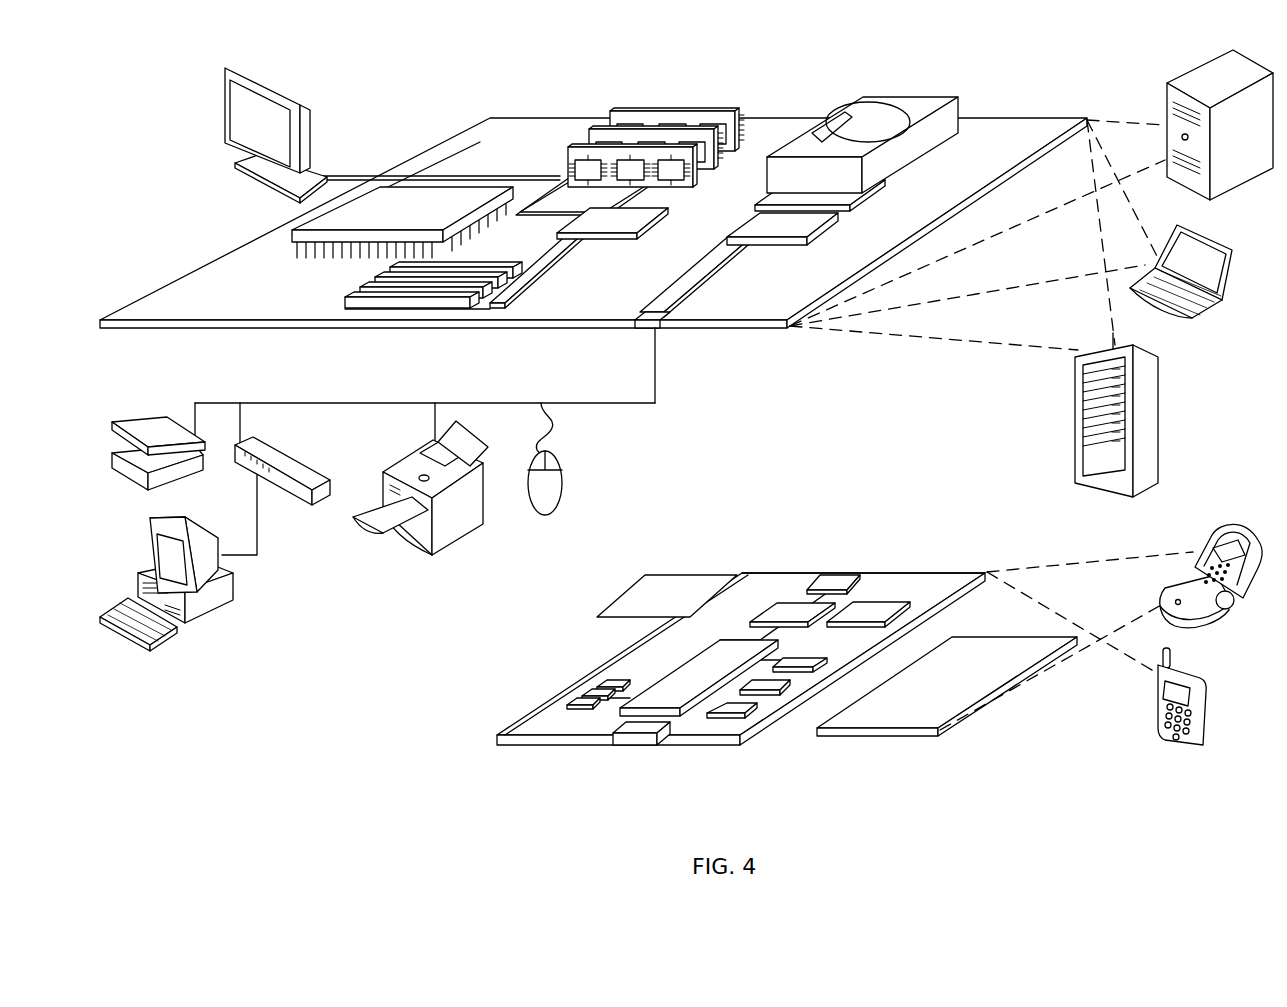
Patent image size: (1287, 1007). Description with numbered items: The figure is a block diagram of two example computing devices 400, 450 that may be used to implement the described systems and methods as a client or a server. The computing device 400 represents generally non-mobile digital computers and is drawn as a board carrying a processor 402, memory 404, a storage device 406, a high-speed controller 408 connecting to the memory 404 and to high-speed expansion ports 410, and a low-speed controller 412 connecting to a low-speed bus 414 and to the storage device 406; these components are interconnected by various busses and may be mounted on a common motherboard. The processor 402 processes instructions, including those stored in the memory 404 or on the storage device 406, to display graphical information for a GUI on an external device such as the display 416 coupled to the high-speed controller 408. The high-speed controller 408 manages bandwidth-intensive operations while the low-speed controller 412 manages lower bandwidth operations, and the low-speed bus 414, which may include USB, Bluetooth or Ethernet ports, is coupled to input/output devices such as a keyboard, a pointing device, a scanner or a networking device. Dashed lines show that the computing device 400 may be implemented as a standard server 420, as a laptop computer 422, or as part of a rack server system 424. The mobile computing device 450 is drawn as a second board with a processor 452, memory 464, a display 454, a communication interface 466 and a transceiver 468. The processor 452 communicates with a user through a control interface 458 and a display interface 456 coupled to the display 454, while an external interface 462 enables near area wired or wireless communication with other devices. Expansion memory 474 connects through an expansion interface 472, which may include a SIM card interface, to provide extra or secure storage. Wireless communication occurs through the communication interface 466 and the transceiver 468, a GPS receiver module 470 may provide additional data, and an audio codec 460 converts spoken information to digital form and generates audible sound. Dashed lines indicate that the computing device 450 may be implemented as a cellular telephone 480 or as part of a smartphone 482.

The computing device 400 is at (133, 82).
The processor 402 is at (294, 238).
The memory 404 is at (622, 110).
The storage device 406 is at (850, 100).
The high-speed controller 408 is at (590, 222).
The high-speed expansion ports 410 is at (368, 294).
The low-speed controller 412 is at (765, 217).
The low-speed bus 414 is at (662, 322).
The display 416 is at (225, 70).
The standard server 420 is at (1168, 112).
The laptop computer 422 is at (1226, 256).
The rack server system 424 is at (1075, 450).
The computing device 450 is at (695, 678).
The processor 452 is at (672, 705).
The display 454 is at (905, 720).
The display interface 456 is at (738, 708).
The control interface 458 is at (768, 690).
The audio codec 460 is at (800, 665).
The external interface 462 is at (633, 735).
The memory 464 is at (588, 702).
The communication interface 466 is at (792, 615).
The transceiver 468 is at (868, 612).
The GPS receiver module 470 is at (843, 586).
The expansion interface 472 is at (710, 593).
The expansion memory 474 is at (648, 593).
The cellular telephone 480 is at (1192, 548).
The smartphone 482 is at (1160, 712).